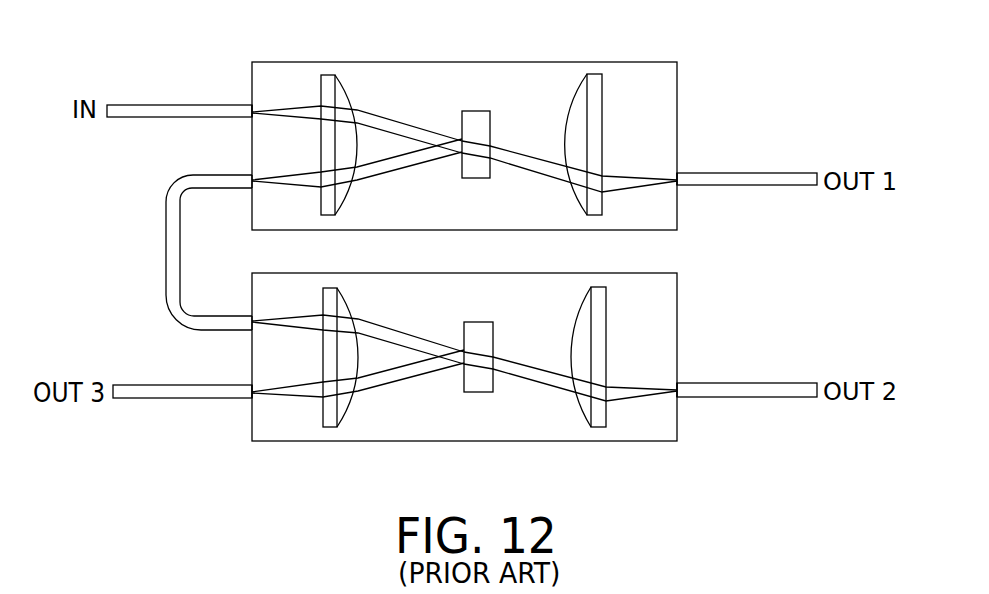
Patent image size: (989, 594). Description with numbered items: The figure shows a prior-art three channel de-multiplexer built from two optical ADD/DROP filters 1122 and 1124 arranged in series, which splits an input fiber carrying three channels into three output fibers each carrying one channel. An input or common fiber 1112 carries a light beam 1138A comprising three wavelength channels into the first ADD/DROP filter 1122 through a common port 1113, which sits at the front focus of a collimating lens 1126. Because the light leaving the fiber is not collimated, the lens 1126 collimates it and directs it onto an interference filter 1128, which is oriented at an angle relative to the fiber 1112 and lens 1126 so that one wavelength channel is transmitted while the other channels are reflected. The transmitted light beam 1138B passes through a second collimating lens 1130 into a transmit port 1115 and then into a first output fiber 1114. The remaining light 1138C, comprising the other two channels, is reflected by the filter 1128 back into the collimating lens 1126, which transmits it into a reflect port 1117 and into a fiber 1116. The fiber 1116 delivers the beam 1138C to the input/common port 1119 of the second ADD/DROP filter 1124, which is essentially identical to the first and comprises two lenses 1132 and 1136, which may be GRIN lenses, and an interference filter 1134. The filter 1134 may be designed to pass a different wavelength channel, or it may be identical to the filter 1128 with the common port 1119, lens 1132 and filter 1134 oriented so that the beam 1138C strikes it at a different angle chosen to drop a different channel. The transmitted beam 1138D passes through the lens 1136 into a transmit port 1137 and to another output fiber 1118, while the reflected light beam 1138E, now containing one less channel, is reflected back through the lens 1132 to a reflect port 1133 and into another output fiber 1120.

The input fiber 1112 is at (155, 103).
The common port 1113 is at (250, 122).
The first output fiber 1114 is at (743, 188).
The transmit port 1115 is at (677, 172).
The fiber 1116 is at (165, 270).
The reflect port 1117 is at (250, 190).
The output fiber 1118 is at (748, 382).
The input/common port 1119 is at (250, 330).
The output fiber 1120 is at (153, 400).
The first ADD/DROP filter 1122 is at (455, 62).
The second ADD/DROP filter 1124 is at (352, 441).
The collimating lens 1126 is at (342, 93).
The interference filter 1128 is at (472, 112).
The collimating lens 1130 is at (597, 104).
The lens 1132 is at (342, 303).
The reflect port 1133 is at (252, 400).
The interference filter 1134 is at (467, 392).
The lens 1136 is at (600, 303).
The transmit port 1137 is at (735, 397).
The light beam 1138A is at (275, 110).
The light beam 1138B is at (527, 172).
The light beam 1138C is at (382, 173).
The light beam 1138D is at (523, 362).
The light beam 1138E is at (380, 383).